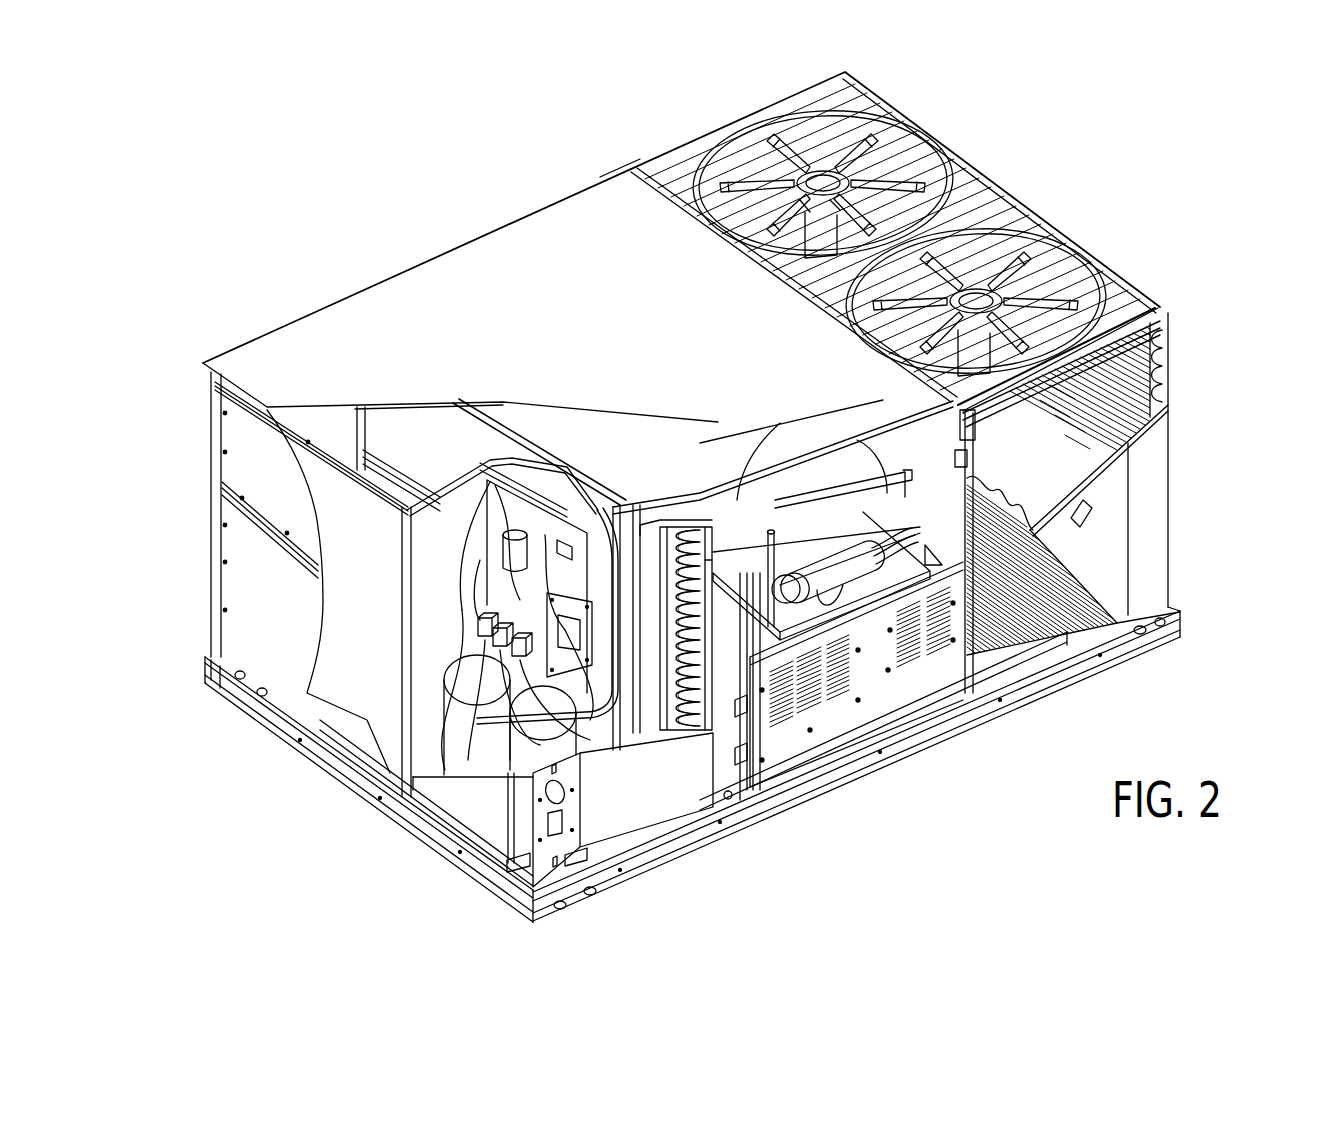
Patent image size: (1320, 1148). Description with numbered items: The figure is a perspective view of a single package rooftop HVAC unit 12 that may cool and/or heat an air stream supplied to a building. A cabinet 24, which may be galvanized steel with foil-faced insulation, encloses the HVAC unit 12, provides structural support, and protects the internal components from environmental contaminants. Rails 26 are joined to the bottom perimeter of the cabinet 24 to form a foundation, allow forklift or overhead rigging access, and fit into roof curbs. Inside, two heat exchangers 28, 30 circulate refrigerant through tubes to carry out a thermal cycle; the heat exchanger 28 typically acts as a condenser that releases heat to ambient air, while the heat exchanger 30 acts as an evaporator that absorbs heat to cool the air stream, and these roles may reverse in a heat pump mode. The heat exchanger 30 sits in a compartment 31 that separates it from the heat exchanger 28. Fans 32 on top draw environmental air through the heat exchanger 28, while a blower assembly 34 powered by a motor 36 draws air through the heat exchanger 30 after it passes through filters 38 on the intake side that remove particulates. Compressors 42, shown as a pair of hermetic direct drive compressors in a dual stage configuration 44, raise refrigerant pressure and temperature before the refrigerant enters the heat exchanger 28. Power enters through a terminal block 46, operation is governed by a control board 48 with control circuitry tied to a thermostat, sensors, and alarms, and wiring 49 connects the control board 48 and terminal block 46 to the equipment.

The HVAC unit 12 is at (400, 184).
The cabinet 24 is at (250, 628).
The rails 26 is at (282, 727).
The heat exchanger 28 is at (1168, 378).
The heat exchanger 30 is at (690, 710).
The compartment 31 is at (705, 558).
The fans 32 is at (998, 268).
The blower assembly 34 is at (897, 510).
The motor 36 is at (825, 560).
The filters 38 is at (647, 543).
The compressors 42 is at (450, 712).
The dual stage configuration 44 is at (442, 667).
The terminal block 46 is at (520, 632).
The control board 48 is at (572, 612).
The wiring 49 is at (645, 533).